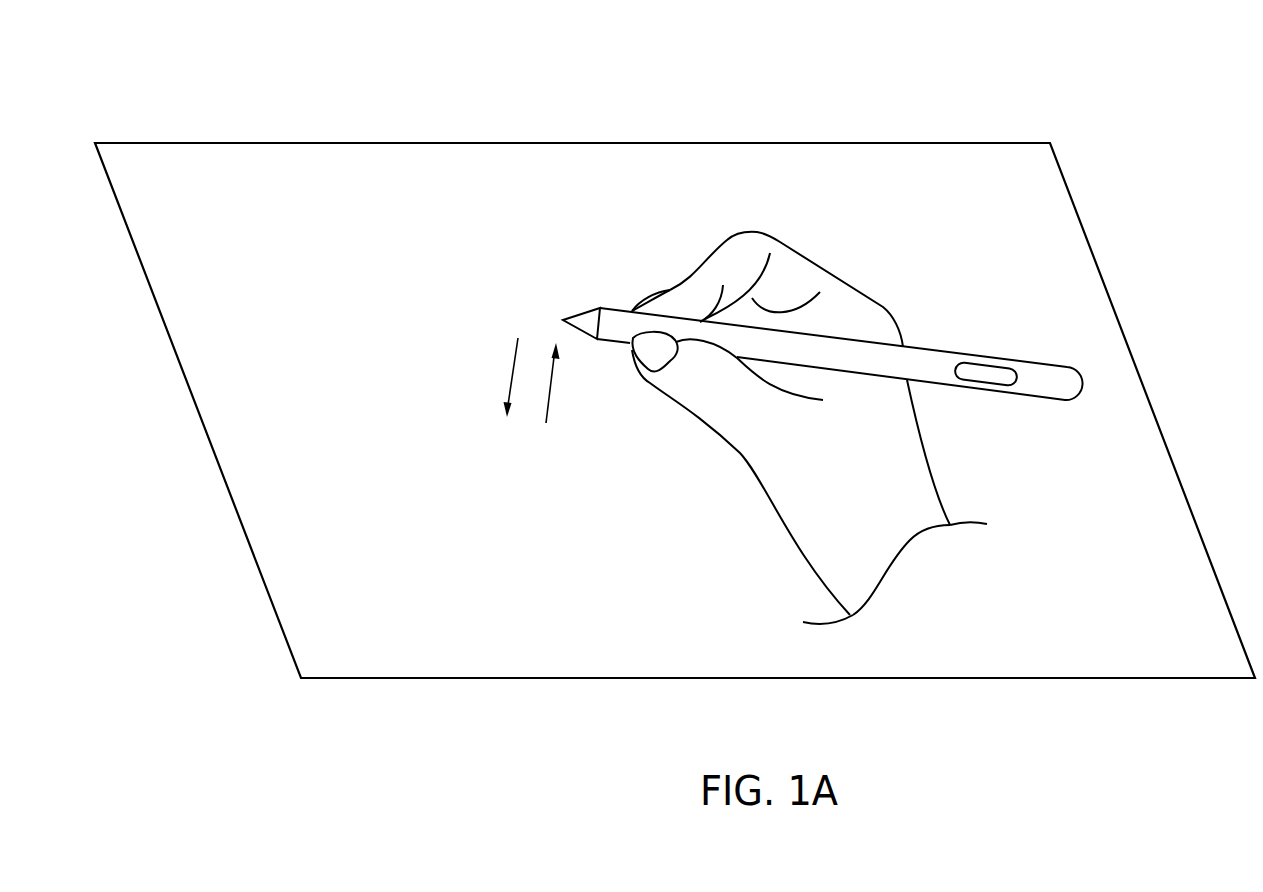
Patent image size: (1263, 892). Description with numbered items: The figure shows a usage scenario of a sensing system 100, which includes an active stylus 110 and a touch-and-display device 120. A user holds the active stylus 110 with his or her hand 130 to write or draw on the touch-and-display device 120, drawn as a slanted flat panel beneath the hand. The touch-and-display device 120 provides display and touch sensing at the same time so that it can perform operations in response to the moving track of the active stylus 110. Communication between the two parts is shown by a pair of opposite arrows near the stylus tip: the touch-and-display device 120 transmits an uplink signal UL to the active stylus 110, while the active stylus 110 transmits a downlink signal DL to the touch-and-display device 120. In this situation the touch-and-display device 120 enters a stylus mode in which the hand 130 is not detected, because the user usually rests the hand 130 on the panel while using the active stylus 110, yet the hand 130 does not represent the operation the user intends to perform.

The sensing system 100 is at (95, 68).
The active stylus 110 is at (1060, 377).
The touch-and-display device 120 is at (1060, 168).
The hand 130 is at (798, 272).
The downlink signal DL is at (507, 370).
The uplink signal UL is at (550, 393).